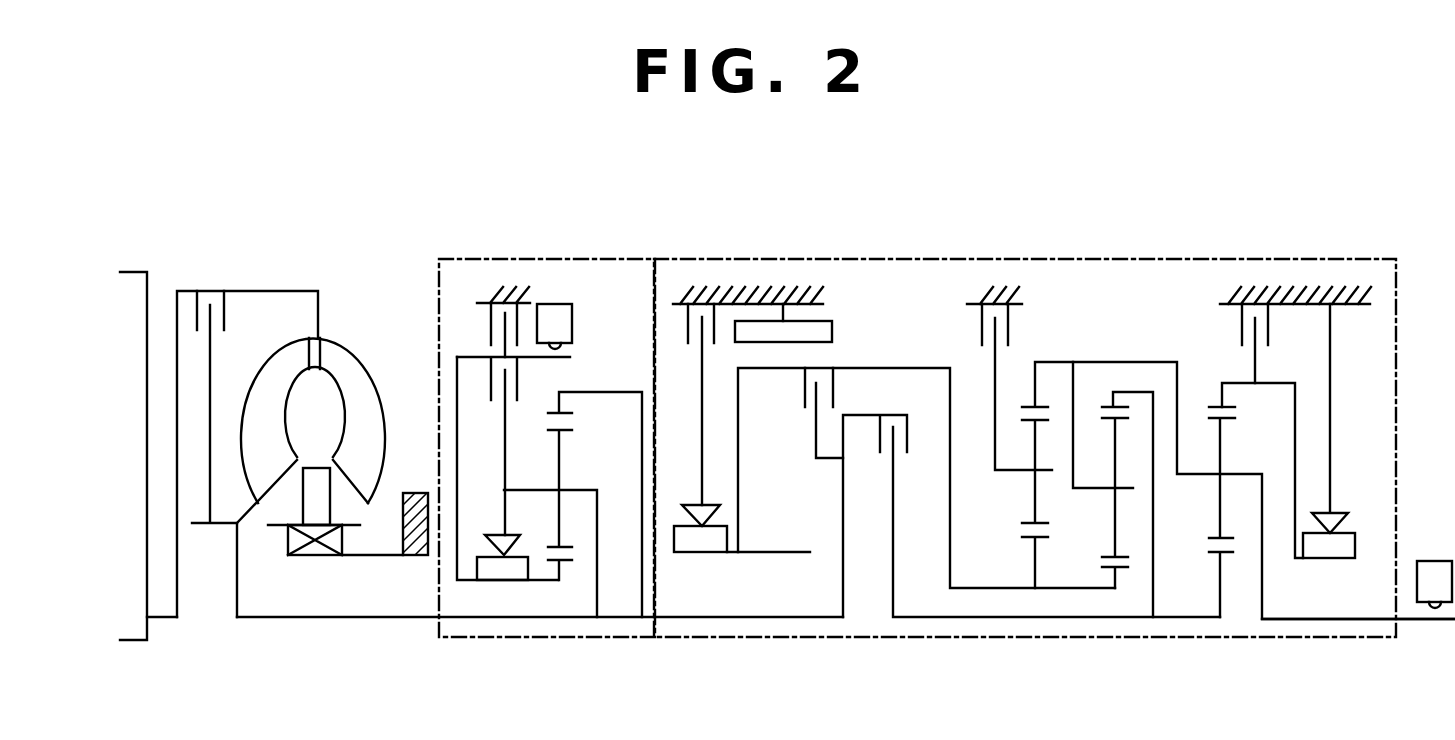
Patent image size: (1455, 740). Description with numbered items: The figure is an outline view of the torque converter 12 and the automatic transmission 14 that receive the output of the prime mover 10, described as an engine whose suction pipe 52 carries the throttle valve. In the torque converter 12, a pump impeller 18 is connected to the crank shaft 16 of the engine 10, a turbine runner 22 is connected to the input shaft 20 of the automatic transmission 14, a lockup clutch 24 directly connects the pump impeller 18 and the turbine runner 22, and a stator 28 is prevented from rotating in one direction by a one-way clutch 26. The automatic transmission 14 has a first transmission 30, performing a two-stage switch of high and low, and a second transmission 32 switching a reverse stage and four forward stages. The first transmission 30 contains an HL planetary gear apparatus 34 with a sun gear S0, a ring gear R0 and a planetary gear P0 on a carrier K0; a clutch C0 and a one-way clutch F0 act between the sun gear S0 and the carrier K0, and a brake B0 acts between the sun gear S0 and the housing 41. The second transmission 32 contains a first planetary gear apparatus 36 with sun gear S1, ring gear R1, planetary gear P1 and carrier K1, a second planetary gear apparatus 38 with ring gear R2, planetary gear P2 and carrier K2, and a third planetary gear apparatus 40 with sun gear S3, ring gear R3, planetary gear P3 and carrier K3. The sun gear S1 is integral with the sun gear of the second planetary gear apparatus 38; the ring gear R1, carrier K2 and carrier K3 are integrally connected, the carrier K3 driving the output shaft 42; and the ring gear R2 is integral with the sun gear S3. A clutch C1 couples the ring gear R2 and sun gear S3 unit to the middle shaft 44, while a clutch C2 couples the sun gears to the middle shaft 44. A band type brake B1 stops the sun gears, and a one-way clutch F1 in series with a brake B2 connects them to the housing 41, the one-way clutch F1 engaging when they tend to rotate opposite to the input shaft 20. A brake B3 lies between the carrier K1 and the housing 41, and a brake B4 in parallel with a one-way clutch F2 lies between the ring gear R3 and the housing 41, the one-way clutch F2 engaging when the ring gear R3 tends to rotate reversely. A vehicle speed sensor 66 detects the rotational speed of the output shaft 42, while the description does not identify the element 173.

The prime mover 10 is at (137, 290).
The torque converter 12 is at (499, 418).
The automatic transmission 14 is at (917, 373).
The crank shaft 16 is at (162, 618).
The pump impeller 18 is at (362, 388).
The input shaft 20 is at (300, 618).
The turbine runner 22 is at (286, 367).
The lockup clutch 24 is at (197, 307).
The one-way clutch 26 is at (317, 551).
The stator 28 is at (303, 497).
The first transmission 30 is at (545, 259).
The second transmission 32 is at (1160, 259).
The HL planetary gear apparatus 34 is at (549, 535).
The first planetary gear apparatus 36 is at (1205, 519).
The second planetary gear apparatus 38 is at (1094, 519).
The third planetary gear apparatus 40 is at (1255, 521).
The housing 41 is at (413, 546).
The output shaft 42 is at (1362, 620).
The middle shaft 44 is at (818, 618).
The suction pipe 52 is at (1103, 584).
The vehicle speed sensor 66 is at (1435, 575).
The input shaft speed sensor 173 is at (555, 325).
The brake B0 is at (490, 323).
The band type brake B1 is at (826, 321).
The brake B2 is at (688, 325).
The brake B3 is at (978, 325).
The brake B4 is at (1268, 325).
The clutch C0 is at (490, 384).
The clutch C1 is at (910, 445).
The clutch C2 is at (801, 392).
The one-way clutch F0 is at (500, 582).
The one-way clutch F1 is at (700, 543).
The one-way clutch F2 is at (1333, 560).
The carrier K0 is at (578, 490).
The carrier K1 is at (1017, 473).
The carrier K2 is at (1092, 489).
The carrier K3 is at (1243, 473).
The planetary gear P0 is at (556, 430).
The planetary gear P1 is at (1022, 421).
The planetary gear P2 is at (1105, 566).
The planetary gear P3 is at (1210, 538).
The ring gear R0 is at (549, 413).
The ring gear R1 is at (1036, 407).
The ring gear R2 is at (1112, 407).
The ring gear R3 is at (1213, 405).
The sun gear S0 is at (549, 563).
The sun gear S1 is at (1030, 540).
The sun gear S3 is at (1212, 558).